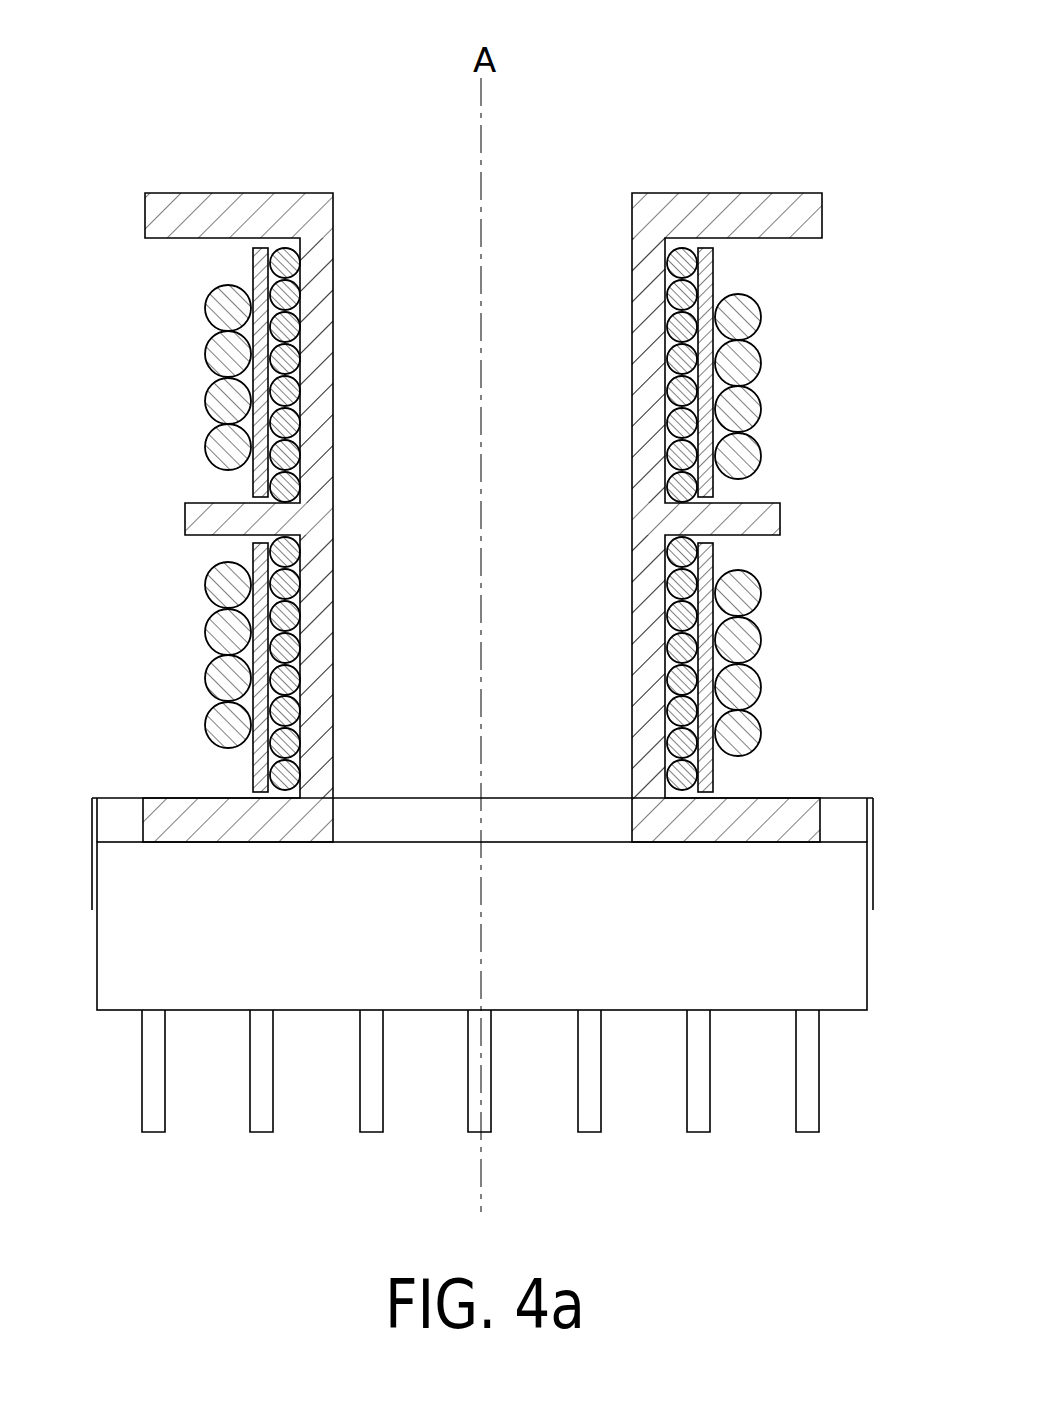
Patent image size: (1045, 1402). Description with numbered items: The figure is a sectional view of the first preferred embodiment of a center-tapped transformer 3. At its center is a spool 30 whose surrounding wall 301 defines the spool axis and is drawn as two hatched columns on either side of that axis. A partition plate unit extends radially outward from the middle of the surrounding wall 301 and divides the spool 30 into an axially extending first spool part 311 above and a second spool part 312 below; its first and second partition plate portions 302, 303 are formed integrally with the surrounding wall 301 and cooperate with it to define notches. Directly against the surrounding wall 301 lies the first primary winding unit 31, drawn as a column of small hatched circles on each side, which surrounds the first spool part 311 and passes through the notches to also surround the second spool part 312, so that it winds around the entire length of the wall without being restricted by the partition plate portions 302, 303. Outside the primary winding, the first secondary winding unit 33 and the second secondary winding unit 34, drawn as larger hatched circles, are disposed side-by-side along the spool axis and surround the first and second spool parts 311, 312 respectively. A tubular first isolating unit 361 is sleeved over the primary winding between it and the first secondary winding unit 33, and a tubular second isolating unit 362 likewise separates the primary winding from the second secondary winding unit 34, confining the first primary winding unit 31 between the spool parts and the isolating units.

The center-tapped transformer 3 is at (645, 150).
The spool 30 is at (230, 212).
The surrounding wall 301 is at (315, 409).
The first partition plate portion 302 is at (193, 518).
The second partition plate portion 303 is at (772, 510).
The first primary winding unit 31 is at (300, 257).
The first spool part 311 is at (323, 330).
The second spool part 312 is at (323, 668).
The first secondary winding unit 33 is at (225, 405).
The second secondary winding unit 34 is at (220, 678).
The first isolating unit 361 is at (253, 258).
The second isolating unit 362 is at (258, 770).